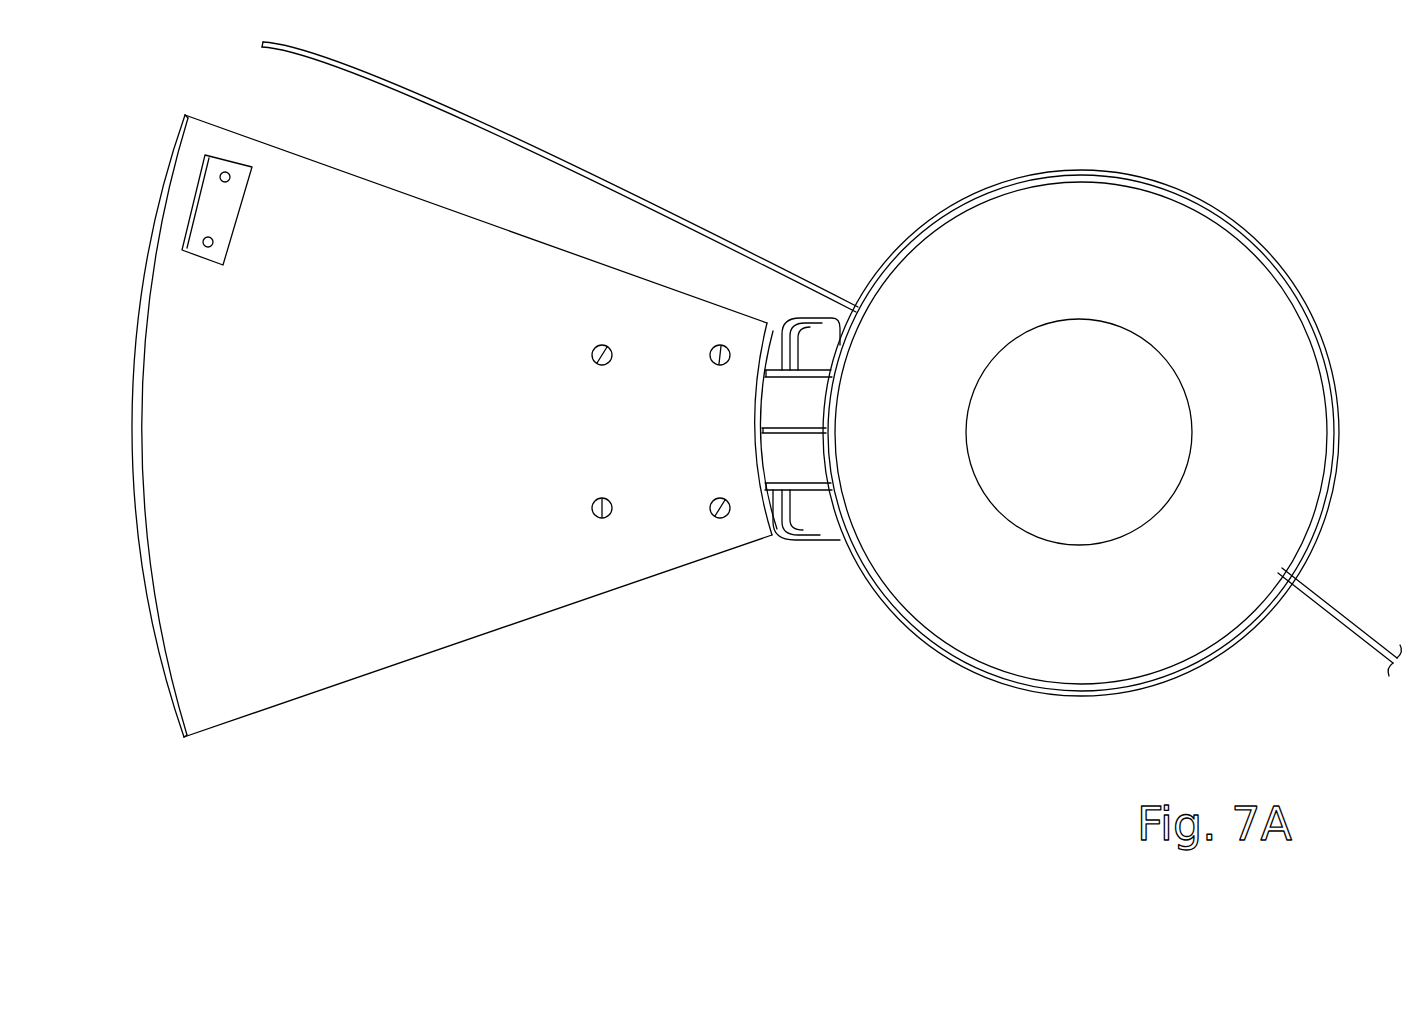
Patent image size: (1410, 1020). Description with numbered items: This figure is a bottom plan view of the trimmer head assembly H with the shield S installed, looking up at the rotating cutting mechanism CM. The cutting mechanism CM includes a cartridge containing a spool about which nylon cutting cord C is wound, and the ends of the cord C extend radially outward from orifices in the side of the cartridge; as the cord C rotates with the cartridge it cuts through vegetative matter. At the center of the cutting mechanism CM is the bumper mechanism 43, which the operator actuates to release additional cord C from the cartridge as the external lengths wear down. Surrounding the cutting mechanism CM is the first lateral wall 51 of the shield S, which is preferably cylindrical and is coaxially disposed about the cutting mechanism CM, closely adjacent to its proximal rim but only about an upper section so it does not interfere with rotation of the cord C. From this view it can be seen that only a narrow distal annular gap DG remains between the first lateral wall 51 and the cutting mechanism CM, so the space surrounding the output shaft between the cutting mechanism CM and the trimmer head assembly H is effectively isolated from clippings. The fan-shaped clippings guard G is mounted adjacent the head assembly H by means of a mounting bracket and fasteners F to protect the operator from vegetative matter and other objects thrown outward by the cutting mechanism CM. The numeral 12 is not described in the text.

The clippings guard G is at (173, 148).
The cutting cord C is at (498, 112).
The shield S is at (882, 203).
The first lateral wall 51 is at (993, 183).
The distal annular gap DG is at (1207, 270).
The bumper mechanism 43 is at (1050, 417).
The collar 12 is at (820, 545).
The fasteners F is at (602, 520).
The trimmer head assembly H is at (717, 680).
The cutting mechanism CM is at (1020, 627).